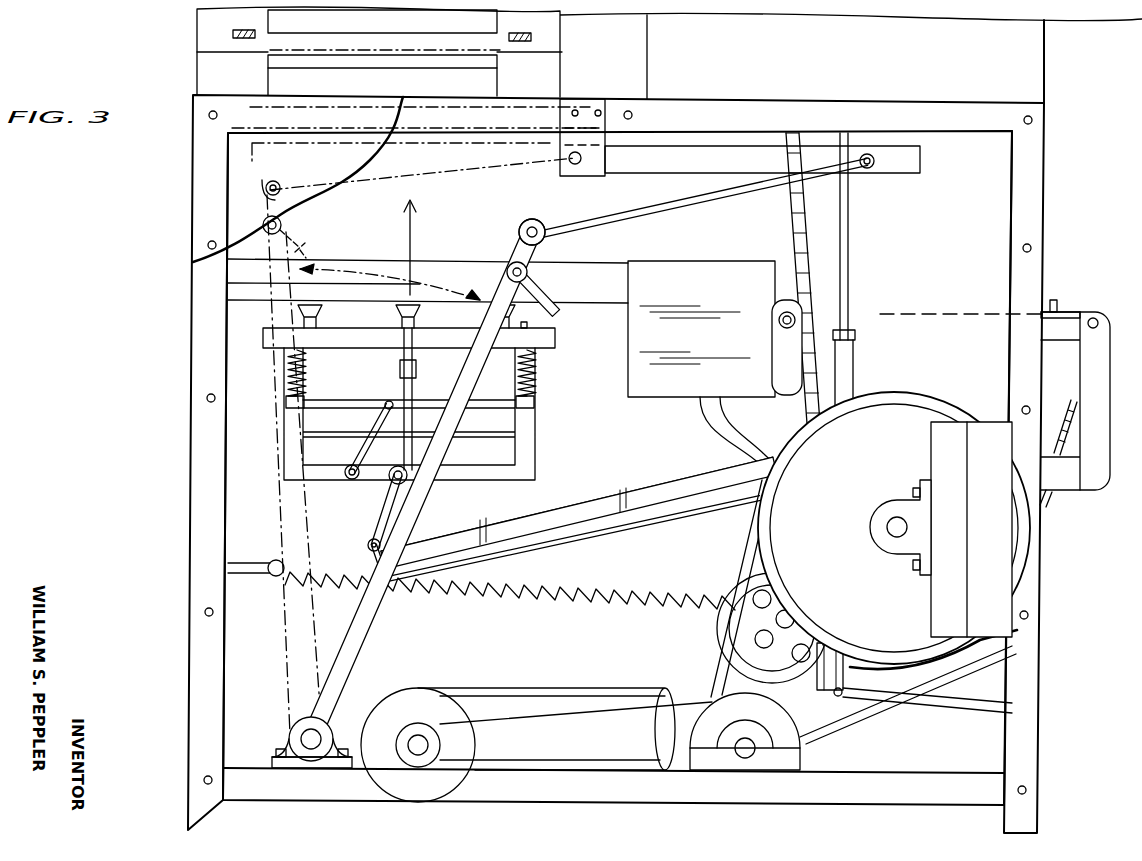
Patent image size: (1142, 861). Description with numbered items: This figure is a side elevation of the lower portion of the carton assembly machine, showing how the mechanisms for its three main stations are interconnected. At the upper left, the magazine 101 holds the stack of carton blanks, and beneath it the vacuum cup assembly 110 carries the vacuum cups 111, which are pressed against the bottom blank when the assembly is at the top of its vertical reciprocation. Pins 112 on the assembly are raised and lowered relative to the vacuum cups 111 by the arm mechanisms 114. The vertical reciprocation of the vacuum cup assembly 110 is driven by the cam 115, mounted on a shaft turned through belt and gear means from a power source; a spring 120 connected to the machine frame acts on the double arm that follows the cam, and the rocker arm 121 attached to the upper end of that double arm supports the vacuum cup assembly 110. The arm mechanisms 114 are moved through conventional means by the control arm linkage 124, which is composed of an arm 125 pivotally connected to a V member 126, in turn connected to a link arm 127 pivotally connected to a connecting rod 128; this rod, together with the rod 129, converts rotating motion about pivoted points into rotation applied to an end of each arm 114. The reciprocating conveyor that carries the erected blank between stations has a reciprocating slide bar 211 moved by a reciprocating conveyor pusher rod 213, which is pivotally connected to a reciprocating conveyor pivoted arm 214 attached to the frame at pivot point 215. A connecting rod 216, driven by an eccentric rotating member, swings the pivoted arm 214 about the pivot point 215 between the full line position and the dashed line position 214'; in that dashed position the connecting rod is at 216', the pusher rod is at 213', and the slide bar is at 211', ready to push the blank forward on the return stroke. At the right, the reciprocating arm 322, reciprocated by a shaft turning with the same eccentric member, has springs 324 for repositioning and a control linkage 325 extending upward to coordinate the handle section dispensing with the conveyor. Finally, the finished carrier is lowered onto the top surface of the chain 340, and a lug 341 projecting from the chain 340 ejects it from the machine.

The magazine 101 is at (215, 20).
The vacuum cup assembly 110 is at (560, 432).
The vacuum cups 111 is at (396, 312).
The pins 112 is at (286, 375).
The arm mechanisms 114 is at (284, 408).
The cam 115 is at (715, 642).
The spring 120 is at (560, 600).
The rocker arm 121 is at (655, 495).
The control arm linkage 124 is at (380, 496).
The arm 125 is at (380, 412).
The V member 126 is at (382, 508).
The link arm 127 is at (368, 546).
The connecting rod 128 is at (560, 548).
The rod 129 is at (492, 538).
The reciprocating slide bar 211 is at (762, 121).
The reciprocating slide bar position 211' is at (401, 177).
The reciprocating conveyor pusher rod 213 is at (703, 196).
The pusher rod position 213' is at (422, 199).
The reciprocating conveyor pivoted arm 214 is at (557, 236).
The pivoted arm position 214' is at (304, 198).
The pivot point 215 is at (308, 738).
The connecting rod 216 is at (445, 481).
The connecting rod position 216' is at (310, 237).
The reciprocating arm 322 is at (932, 703).
The springs 324 is at (795, 240).
The control linkage 325 is at (850, 245).
The chain 340 is at (1068, 310).
The lug 341 is at (1055, 298).